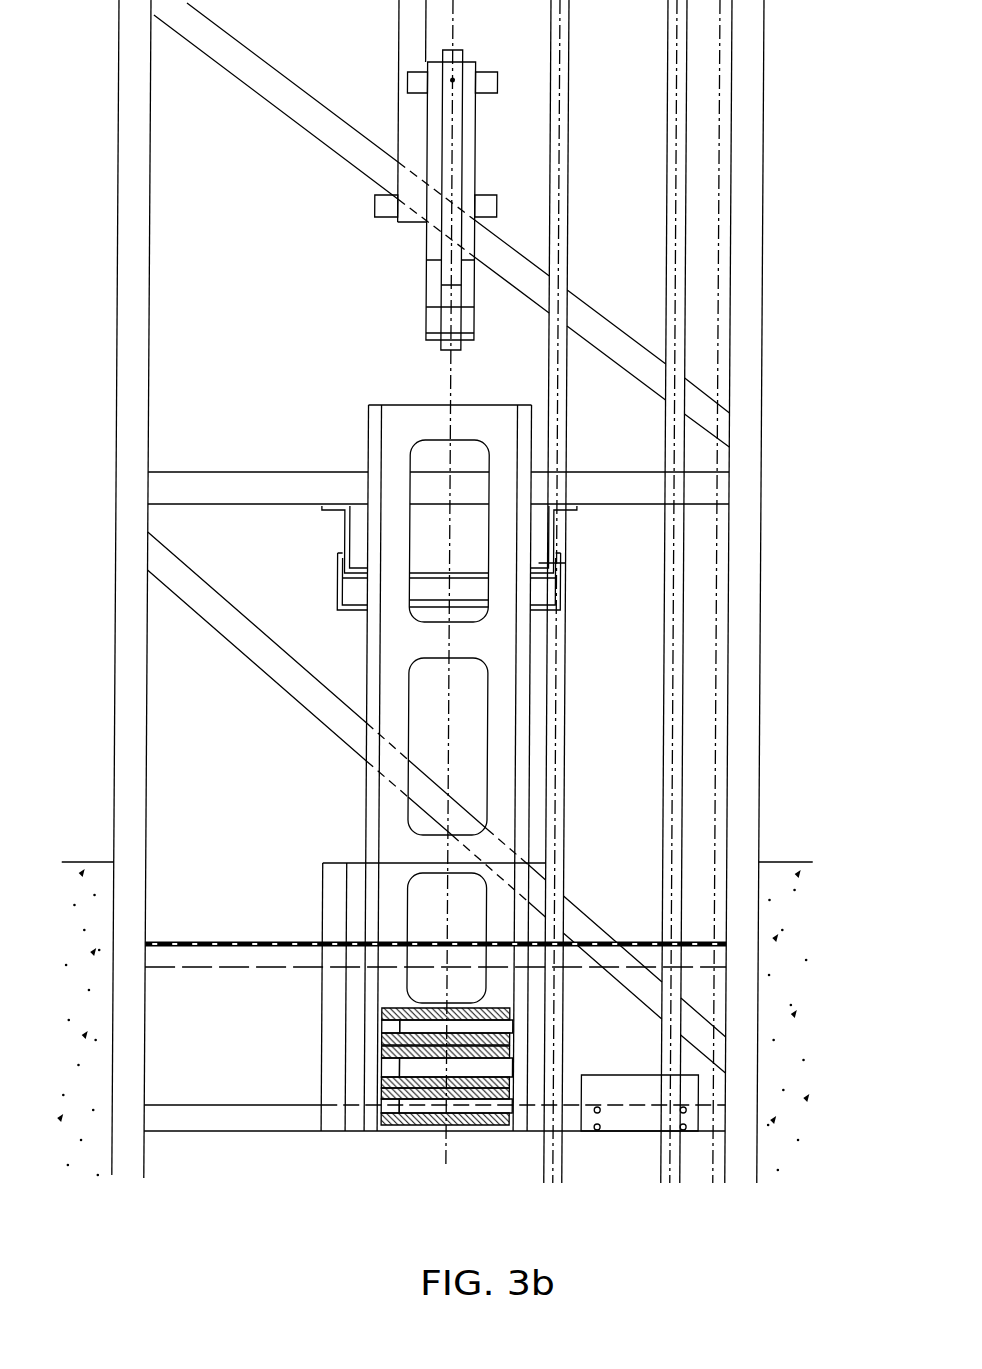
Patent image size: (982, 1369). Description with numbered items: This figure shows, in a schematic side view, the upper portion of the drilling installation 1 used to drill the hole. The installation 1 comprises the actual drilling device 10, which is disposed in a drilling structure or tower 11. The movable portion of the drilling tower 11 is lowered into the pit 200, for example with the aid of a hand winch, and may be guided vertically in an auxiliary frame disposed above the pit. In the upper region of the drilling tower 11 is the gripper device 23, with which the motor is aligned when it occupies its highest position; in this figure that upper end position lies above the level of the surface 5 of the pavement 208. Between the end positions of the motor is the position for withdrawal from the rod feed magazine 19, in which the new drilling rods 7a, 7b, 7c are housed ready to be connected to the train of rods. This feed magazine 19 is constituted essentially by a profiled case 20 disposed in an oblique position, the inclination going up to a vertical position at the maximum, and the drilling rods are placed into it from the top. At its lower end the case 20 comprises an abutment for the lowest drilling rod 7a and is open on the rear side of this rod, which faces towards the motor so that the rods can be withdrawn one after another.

The installation 1 is at (792, 171).
The surface 5 is at (64, 876).
The lowest drilling rod 7a is at (410, 1123).
The drilling rod 7b is at (390, 1068).
The drilling rod 7c is at (390, 1030).
The drilling device 10 is at (366, 680).
The drilling tower 11 is at (165, 490).
The rod feed magazine 19 is at (376, 845).
The profiled case 20 is at (397, 457).
The gripper device 23 is at (432, 320).
The pit 200 is at (208, 1070).
The pavement 208 is at (780, 866).